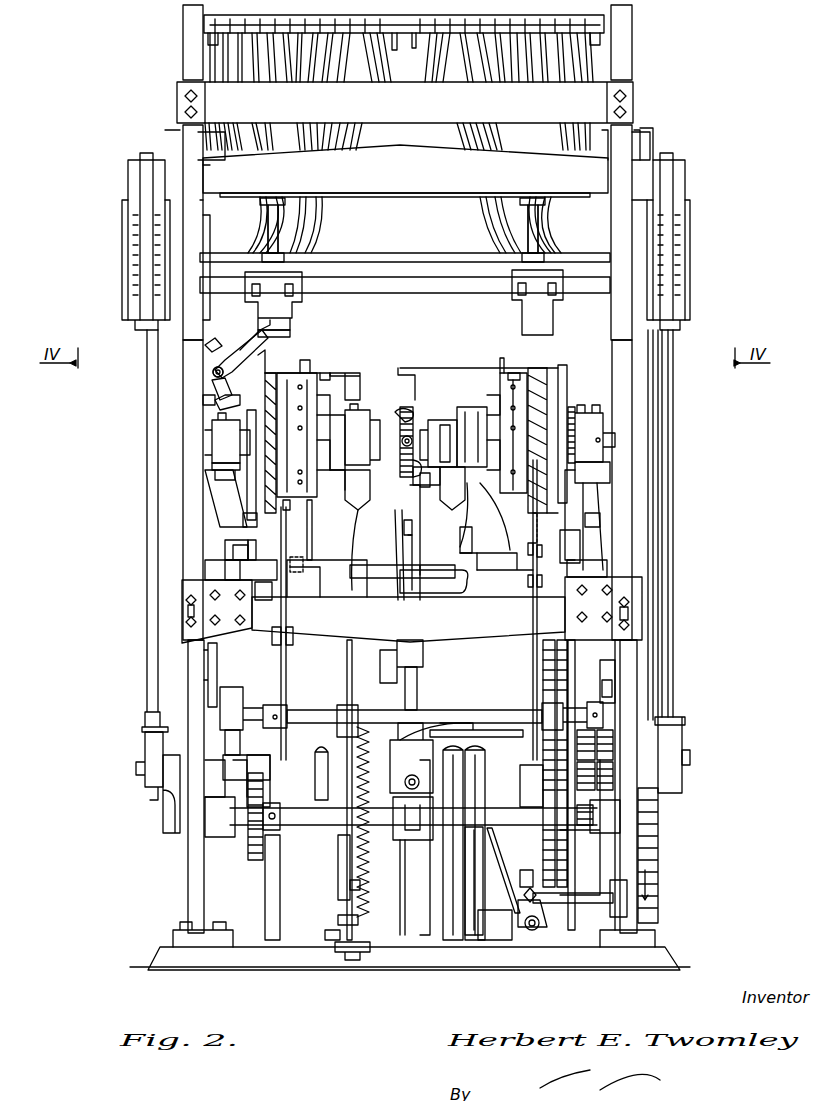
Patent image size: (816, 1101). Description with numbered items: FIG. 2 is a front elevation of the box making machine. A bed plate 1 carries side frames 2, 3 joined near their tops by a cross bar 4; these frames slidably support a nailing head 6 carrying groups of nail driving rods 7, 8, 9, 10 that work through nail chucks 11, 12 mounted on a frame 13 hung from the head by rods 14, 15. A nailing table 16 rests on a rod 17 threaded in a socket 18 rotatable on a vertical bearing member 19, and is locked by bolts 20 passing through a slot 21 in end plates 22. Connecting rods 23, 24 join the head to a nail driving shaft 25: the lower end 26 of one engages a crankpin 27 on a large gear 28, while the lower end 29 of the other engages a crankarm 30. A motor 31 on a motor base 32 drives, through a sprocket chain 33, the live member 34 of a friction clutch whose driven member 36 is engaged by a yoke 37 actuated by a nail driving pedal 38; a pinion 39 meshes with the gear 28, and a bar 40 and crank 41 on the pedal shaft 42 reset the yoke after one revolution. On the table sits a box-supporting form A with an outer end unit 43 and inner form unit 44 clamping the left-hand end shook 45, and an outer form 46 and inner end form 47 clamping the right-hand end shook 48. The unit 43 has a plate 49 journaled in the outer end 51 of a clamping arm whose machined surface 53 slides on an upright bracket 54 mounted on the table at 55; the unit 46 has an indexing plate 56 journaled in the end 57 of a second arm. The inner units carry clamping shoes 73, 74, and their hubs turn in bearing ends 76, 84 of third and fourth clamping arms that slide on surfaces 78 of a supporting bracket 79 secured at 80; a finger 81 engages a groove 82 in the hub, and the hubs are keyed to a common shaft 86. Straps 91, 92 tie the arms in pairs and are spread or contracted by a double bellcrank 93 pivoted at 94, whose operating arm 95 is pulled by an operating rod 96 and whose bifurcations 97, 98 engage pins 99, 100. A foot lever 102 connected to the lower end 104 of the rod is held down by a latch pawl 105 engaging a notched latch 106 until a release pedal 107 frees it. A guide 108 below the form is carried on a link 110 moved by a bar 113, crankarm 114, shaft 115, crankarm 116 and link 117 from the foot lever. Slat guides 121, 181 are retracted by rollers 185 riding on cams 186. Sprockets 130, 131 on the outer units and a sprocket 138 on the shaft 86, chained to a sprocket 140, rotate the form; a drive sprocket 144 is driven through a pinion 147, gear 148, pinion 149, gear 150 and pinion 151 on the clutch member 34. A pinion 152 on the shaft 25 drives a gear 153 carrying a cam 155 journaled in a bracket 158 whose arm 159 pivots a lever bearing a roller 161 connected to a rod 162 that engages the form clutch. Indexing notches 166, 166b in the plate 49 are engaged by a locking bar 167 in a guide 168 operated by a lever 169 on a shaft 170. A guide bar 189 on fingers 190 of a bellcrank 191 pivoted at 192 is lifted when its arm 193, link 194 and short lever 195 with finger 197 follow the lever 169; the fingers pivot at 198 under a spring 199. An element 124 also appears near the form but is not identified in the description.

The bed plate 1 is at (678, 952).
The side frame 2 is at (640, 845).
The side frame 3 is at (188, 878).
The cross bar 4 is at (585, 95).
The nailing head 6 is at (382, 182).
The nail driving rod 7 is at (530, 240).
The nail driving rod 8 is at (528, 220).
The nail driving rod 9 is at (280, 220).
The nail driving rod 10 is at (280, 240).
The nail chuck 11 is at (512, 315).
The nail chuck 12 is at (292, 312).
The frame 13 is at (408, 256).
The rod 14 is at (618, 243).
The rod 15 is at (170, 240).
The nailing table 16 is at (315, 628).
The rod 17 is at (402, 703).
The socket 18 is at (390, 778).
The vertical bearing member 19 is at (440, 870).
The bolt 20 is at (188, 620).
The elongated slot 21 is at (630, 610).
The end plate 22 is at (190, 636).
The connecting rod 23 is at (610, 483).
The connecting rod 24 is at (147, 484).
The nail driving shaft 25 is at (330, 815).
The lower end of connecting rod 26 is at (672, 758).
The crankpin 27 is at (692, 758).
The large gear 28 is at (660, 905).
The lower end of connecting rod 29 is at (150, 785).
The crankarm 30 is at (165, 812).
The motor 31 is at (380, 658).
The motor base 32 is at (460, 745).
The sprocket chain 33 is at (568, 877).
The live clutch member 34 is at (530, 865).
The driven clutch member 36 is at (512, 790).
The clutch-operating yoke 37 is at (498, 843).
The nail driving pedal 38 is at (488, 945).
The pinion 39 is at (660, 810).
The rod 40 is at (592, 898).
The crank 41 is at (542, 910).
The shaft 42 is at (535, 932).
The outer end unit 43 is at (258, 398).
The inner form unit 44 is at (320, 392).
The left-hand end shook 45 is at (250, 488).
The outer form 46 is at (566, 388).
The inner end form 47 is at (491, 394).
The right-hand end shook 48 is at (590, 408).
The plate 49 is at (250, 516).
The outer end of clamping arm 51 is at (212, 428).
The machined surface 53 is at (215, 470).
The upright bracket 54 is at (220, 508).
The bracket mounting 55 is at (205, 570).
The indexing plate 56 is at (593, 503).
The end of second clamping arm 57 is at (598, 428).
The clamping shoe 73 is at (290, 375).
The clamping shoe 74 is at (287, 507).
The bearing end 76 is at (360, 410).
The surface 78 is at (365, 475).
The supporting bracket 79 is at (365, 500).
The bracket securing point 80 is at (327, 587).
The projecting finger 81 is at (348, 415).
The groove 82 is at (330, 445).
The bearing end 84 is at (462, 407).
The common shaft 86 is at (398, 510).
The strap 91 is at (445, 478).
The strap 92 is at (444, 425).
The double bellcrank 93 is at (402, 512).
The pivot 94 is at (432, 420).
The operating arm 95 is at (365, 488).
The operating rod 96 is at (348, 664).
The bifurcation 97 is at (428, 488).
The bifurcation 98 is at (405, 407).
The pin 99 is at (425, 497).
The pin 100 is at (420, 400).
The foot lever 102 is at (340, 955).
The lower end of operating rod 104 is at (350, 888).
The latch pawl 105 is at (338, 918).
The notched latch 106 is at (338, 870).
The release pedal 107 is at (345, 925).
The guide 108 is at (303, 558).
The link 110 is at (287, 585).
The bar 113 is at (272, 638).
The crankarm 114 is at (258, 690).
The shaft 115 is at (305, 712).
The crankarm 116 is at (337, 725).
The link 117 is at (358, 773).
The slat guide 121 is at (310, 368).
The bar 124 is at (355, 376).
The sprocket 130 is at (203, 400).
The sprocket 131 is at (612, 480).
The sprocket 138 is at (405, 535).
The sprocket 140 is at (448, 576).
The drive sprocket 144 is at (236, 738).
The pinion 147 is at (600, 702).
The gear 148 is at (610, 748).
The pinion 149 is at (600, 785).
The gear 150 is at (597, 750).
The pinion 151 is at (595, 810).
The pinion 152 is at (278, 832).
The gear 153 is at (255, 865).
The cam 155 is at (235, 845).
The bracket 158 is at (267, 902).
The extending arm 159 is at (272, 760).
The roller 161 is at (250, 765).
The rod 162 is at (218, 645).
The indexing notch 166 is at (571, 450).
The indexing notch 166b is at (575, 355).
The locking bar 167 is at (249, 520).
The guide 168 is at (247, 517).
The lever 169 is at (273, 572).
The shaft 170 is at (440, 578).
The slat guide 181 is at (495, 530).
The roller 185 is at (492, 404).
The cam 186 is at (310, 520).
The guide bar 189 is at (264, 360).
The finger 190 is at (256, 348).
The bellcrank 191 is at (228, 350).
The pivot 192 is at (213, 362).
The arm 193 is at (215, 380).
The link 194 is at (215, 400).
The short lever 195 is at (248, 548).
The projecting finger 197 is at (233, 552).
The pivot 198 is at (290, 334).
The spring 199 is at (205, 342).
The box-supporting form A is at (573, 373).